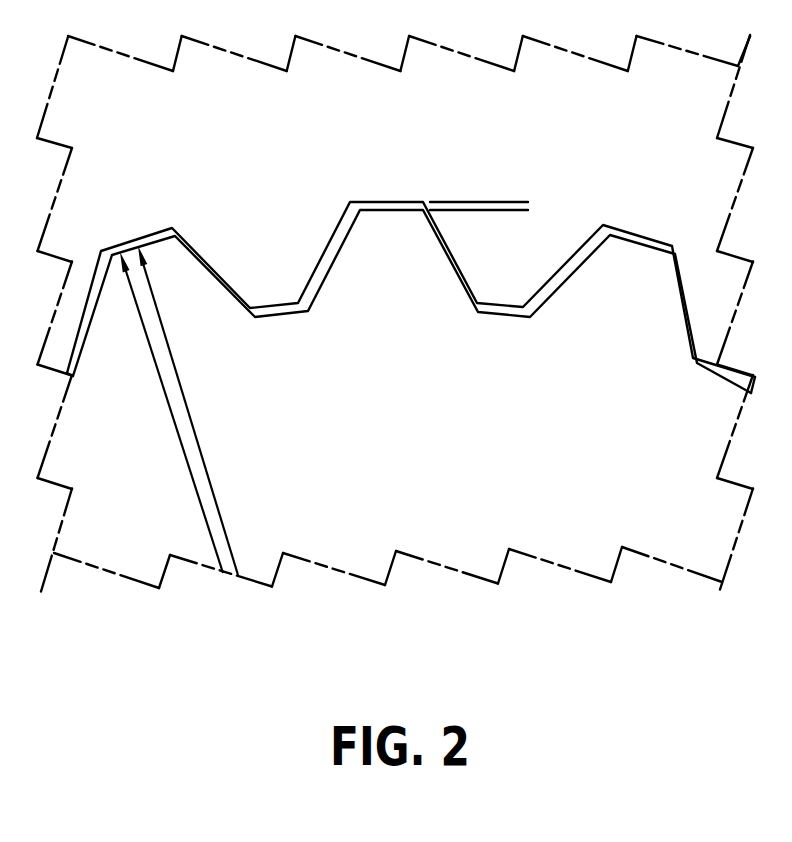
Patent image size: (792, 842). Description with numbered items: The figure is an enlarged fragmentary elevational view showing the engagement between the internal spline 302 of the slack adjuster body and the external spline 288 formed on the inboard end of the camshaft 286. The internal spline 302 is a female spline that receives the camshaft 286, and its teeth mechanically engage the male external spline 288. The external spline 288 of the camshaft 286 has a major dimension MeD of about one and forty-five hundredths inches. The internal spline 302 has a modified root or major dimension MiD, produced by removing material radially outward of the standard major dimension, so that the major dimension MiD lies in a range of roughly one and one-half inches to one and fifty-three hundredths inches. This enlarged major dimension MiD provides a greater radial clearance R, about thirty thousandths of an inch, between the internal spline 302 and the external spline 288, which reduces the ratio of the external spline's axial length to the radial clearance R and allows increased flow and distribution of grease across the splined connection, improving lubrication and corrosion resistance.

The internal spline 302 is at (622, 128).
The external spline 288 is at (426, 477).
The camshaft 286 is at (528, 552).
The radial clearance R is at (488, 203).
The major dimension of external spline MeD is at (173, 418).
The major dimension of internal spline MiD is at (177, 374).